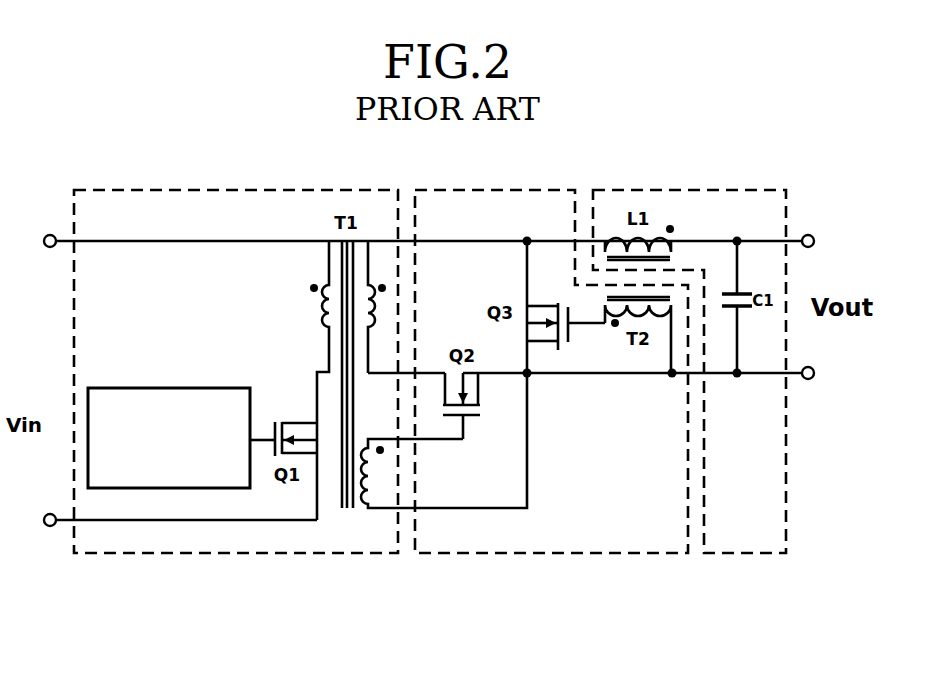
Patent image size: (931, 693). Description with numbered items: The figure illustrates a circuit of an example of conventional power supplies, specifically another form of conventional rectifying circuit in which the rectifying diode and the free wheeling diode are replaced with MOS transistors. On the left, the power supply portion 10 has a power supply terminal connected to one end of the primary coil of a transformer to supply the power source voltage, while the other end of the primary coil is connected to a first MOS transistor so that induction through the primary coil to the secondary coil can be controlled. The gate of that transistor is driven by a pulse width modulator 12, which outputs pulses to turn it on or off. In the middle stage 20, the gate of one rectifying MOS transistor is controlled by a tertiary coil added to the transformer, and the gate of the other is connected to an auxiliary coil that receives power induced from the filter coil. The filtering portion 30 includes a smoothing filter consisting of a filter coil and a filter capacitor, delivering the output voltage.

The power supply portion 10 is at (230, 554).
The pulse width modulator 12 is at (160, 388).
The secondary side synchronous rectifier stage 20 is at (634, 554).
The filtering portion 30 is at (757, 554).